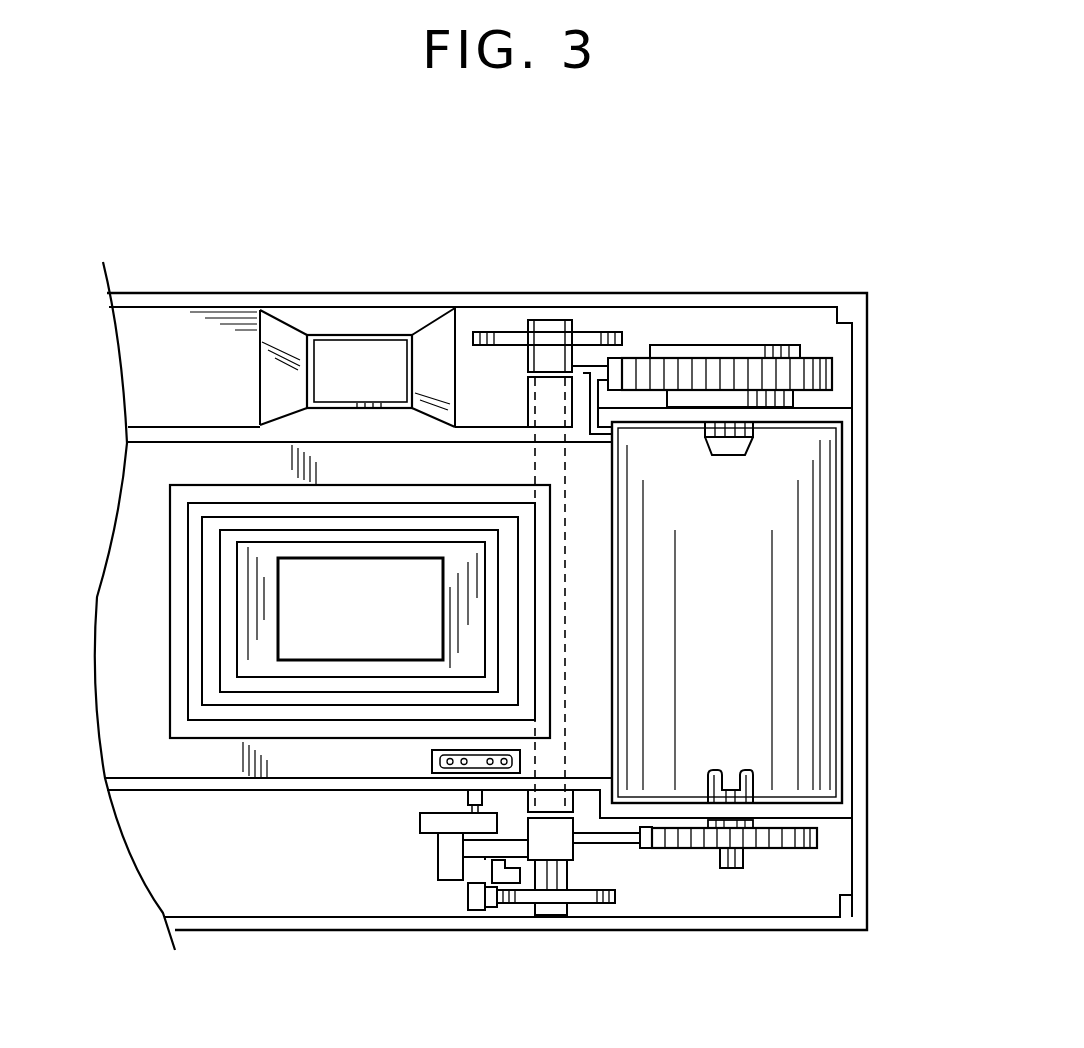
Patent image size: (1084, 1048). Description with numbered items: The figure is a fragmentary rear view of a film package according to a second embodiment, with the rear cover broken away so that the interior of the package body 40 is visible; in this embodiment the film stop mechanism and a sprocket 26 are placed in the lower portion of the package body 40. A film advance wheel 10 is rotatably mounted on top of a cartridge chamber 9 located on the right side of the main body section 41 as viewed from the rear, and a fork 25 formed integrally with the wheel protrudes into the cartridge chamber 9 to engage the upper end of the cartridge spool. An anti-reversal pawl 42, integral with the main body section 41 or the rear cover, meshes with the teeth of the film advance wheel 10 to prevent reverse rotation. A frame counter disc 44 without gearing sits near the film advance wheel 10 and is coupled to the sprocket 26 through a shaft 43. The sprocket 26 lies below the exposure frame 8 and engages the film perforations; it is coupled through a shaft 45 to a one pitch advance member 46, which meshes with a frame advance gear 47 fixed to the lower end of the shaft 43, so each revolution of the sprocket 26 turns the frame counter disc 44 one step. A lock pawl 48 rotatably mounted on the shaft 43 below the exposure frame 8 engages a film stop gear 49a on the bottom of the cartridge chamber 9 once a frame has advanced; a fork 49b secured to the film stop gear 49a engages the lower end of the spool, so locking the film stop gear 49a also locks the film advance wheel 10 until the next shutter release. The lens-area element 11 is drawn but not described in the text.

The exposure frame 8 is at (170, 655).
The cartridge chamber 9 is at (822, 626).
The film advance wheel 10 is at (832, 371).
The taking lens 11 is at (340, 353).
The fork 25 is at (752, 447).
The sprocket 26 is at (430, 762).
The package body 40 is at (770, 292).
The main body section 41 is at (847, 515).
The anti-reversal pawl 42 is at (615, 365).
The shaft 43 is at (540, 320).
The frame counter disc 44 is at (585, 332).
The shaft 45 is at (467, 797).
The one pitch advance member 46 is at (470, 895).
The frame advance gear 47 is at (518, 904).
The lock pawl 48 is at (627, 845).
The film stop gear 49a is at (780, 849).
The fork 49b is at (750, 770).